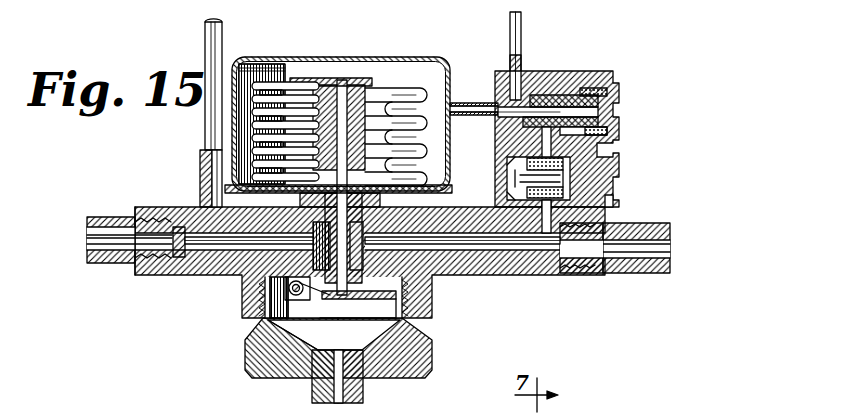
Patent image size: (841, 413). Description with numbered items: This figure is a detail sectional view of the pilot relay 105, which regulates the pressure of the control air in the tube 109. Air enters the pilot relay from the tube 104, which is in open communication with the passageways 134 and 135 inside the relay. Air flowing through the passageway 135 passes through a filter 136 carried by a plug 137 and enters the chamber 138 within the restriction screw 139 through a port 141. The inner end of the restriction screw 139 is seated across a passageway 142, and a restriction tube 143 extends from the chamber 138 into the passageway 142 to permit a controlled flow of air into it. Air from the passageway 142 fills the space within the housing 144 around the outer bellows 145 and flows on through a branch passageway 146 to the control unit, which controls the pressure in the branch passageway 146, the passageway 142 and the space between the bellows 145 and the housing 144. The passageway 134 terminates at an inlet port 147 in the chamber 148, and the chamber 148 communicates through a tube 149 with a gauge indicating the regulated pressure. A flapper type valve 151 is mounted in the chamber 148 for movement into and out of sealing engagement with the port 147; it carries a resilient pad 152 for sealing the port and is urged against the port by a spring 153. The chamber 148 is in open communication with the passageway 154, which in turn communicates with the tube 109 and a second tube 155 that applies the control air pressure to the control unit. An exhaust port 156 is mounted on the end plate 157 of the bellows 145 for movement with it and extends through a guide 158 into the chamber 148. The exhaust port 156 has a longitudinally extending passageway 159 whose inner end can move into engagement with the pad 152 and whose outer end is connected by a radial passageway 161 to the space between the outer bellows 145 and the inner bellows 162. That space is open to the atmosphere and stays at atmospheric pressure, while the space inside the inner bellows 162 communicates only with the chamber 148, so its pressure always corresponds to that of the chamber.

The tube 104 is at (645, 276).
The pilot relay 105 is at (553, 282).
The tube 109 is at (112, 216).
The passageway 134 is at (508, 262).
The passageway 135 is at (608, 207).
The filter 136 is at (540, 165).
The plug 137 is at (620, 169).
The chamber 138 is at (622, 104).
The restriction screw 139 is at (616, 95).
The port 141 is at (520, 120).
The passageway 142 is at (498, 88).
The restriction tube 143 is at (620, 124).
The housing 144 is at (270, 58).
The outer bellows 145 is at (432, 92).
The branch passageway 146 is at (523, 30).
The inlet port 147 is at (398, 294).
The chamber 148 is at (412, 342).
The tube 149 is at (312, 392).
The flapper type valve 151 is at (392, 334).
The resilient pad 152 is at (410, 305).
The spring 153 is at (270, 318).
The passageway 154 is at (228, 250).
The second tube 155 is at (206, 125).
The exhaust port 156 is at (325, 233).
The end plate 157 is at (342, 80).
The guide 158 is at (365, 252).
The longitudinally extending passageway 159 is at (360, 85).
The radial passageway 161 is at (328, 78).
The inner bellows 162 is at (396, 95).